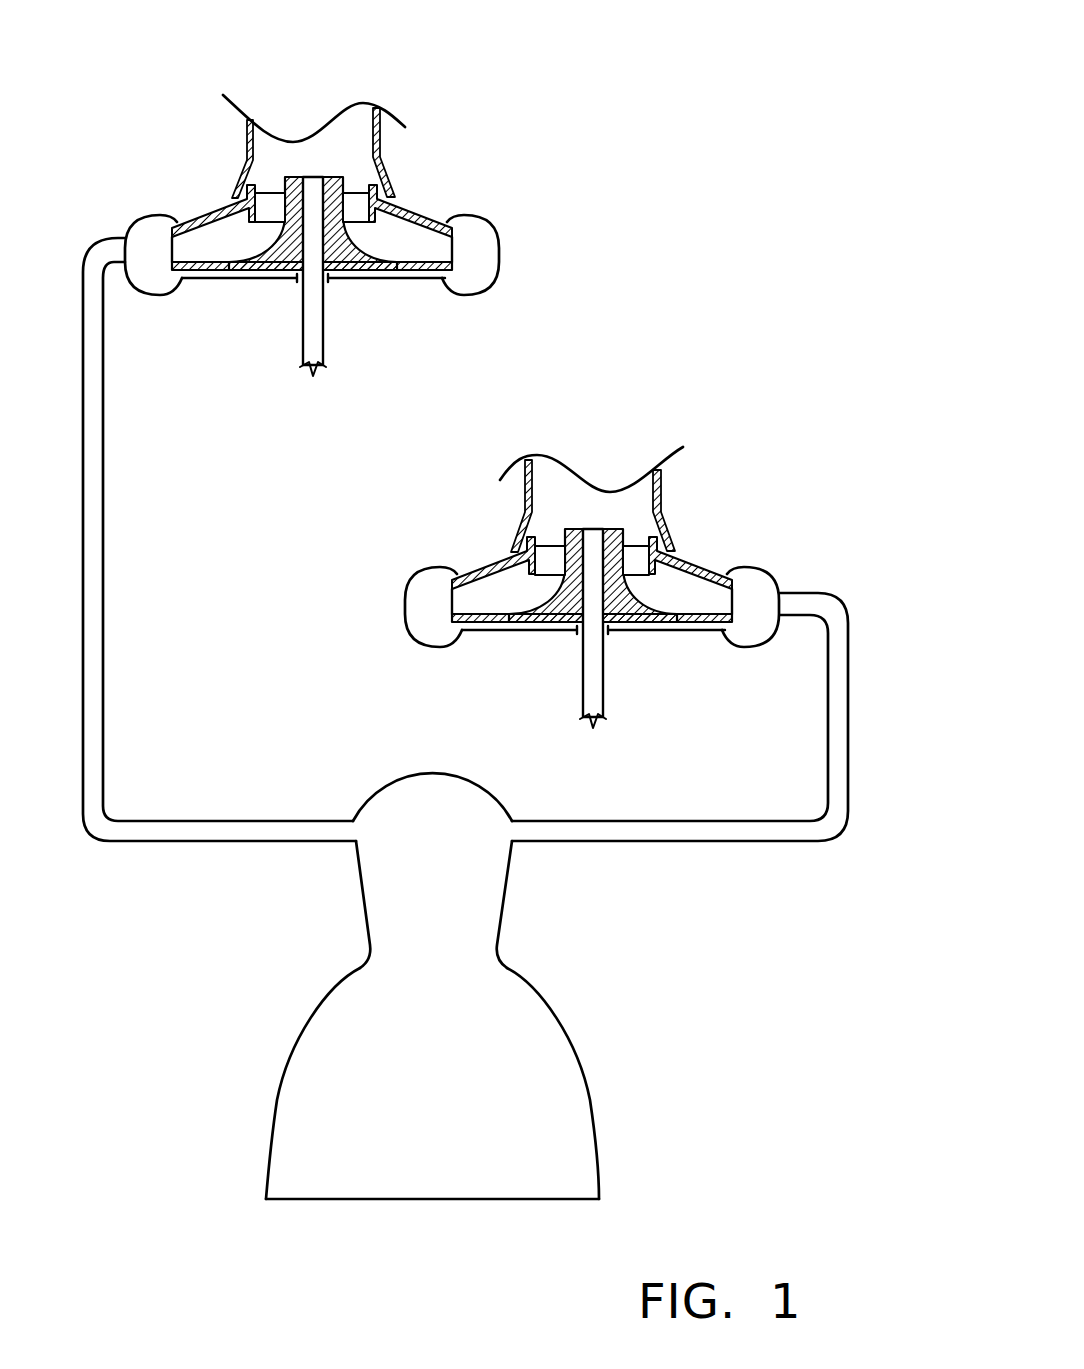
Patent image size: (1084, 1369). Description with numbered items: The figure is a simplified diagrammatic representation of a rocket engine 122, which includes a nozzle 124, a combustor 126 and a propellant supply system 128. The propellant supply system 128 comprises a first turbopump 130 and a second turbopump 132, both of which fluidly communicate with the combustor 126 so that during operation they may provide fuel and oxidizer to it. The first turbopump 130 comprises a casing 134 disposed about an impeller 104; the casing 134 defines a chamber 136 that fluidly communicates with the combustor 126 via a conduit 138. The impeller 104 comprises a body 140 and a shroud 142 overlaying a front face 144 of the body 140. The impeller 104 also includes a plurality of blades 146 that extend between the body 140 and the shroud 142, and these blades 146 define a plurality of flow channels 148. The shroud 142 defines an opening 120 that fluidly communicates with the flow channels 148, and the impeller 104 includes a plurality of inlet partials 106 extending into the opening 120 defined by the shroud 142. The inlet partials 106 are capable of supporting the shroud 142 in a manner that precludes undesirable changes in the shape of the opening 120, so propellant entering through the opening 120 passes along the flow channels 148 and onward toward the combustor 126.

The impeller 104 is at (648, 630).
The inlet partials 106 is at (563, 565).
The opening 120 is at (637, 531).
The rocket engine 122 is at (437, 988).
The nozzle 124 is at (289, 1056).
The combustor 126 is at (494, 885).
The propellant supply system 128 is at (515, 489).
The first turbopump 130 is at (586, 538).
The second turbopump 132 is at (449, 106).
The casing 134 is at (778, 580).
The chamber 136 is at (764, 602).
The conduit 138 is at (843, 707).
The body 140 is at (560, 632).
The shroud 142 is at (500, 596).
The front face 144 is at (467, 575).
The blades 146 is at (700, 575).
The flow channels 148 is at (510, 555).